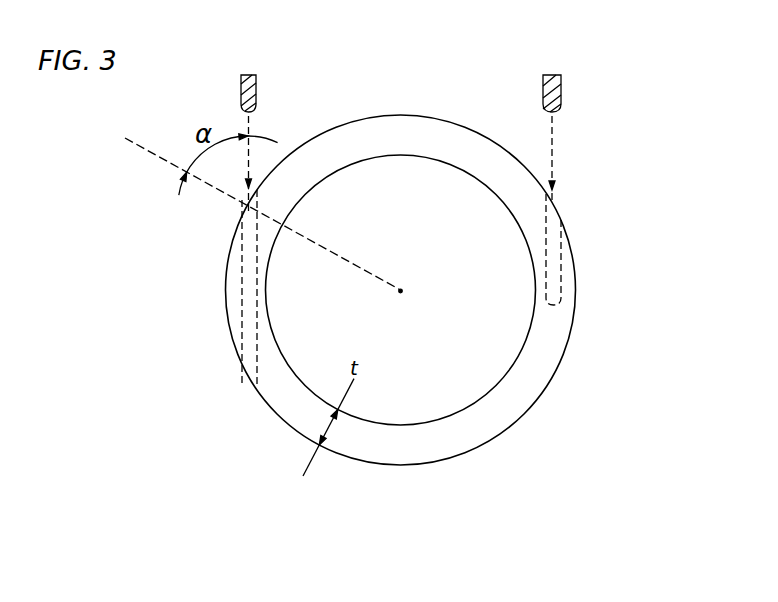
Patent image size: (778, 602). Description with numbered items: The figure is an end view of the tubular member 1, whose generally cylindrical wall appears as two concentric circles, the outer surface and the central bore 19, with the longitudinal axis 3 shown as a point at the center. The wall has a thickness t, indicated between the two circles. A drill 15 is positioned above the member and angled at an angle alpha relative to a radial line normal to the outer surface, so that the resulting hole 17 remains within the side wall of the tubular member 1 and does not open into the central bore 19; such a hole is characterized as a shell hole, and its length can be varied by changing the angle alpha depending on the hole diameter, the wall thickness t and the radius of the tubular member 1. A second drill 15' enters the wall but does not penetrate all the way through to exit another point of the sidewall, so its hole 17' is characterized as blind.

The tubular body 1 is at (546, 410).
The longitudinal axis 3 is at (404, 290).
The drill 15 is at (274, 131).
The drill 15' is at (515, 126).
The hole 17 is at (209, 288).
The hole 17' is at (608, 249).
The central bore 19 is at (307, 358).